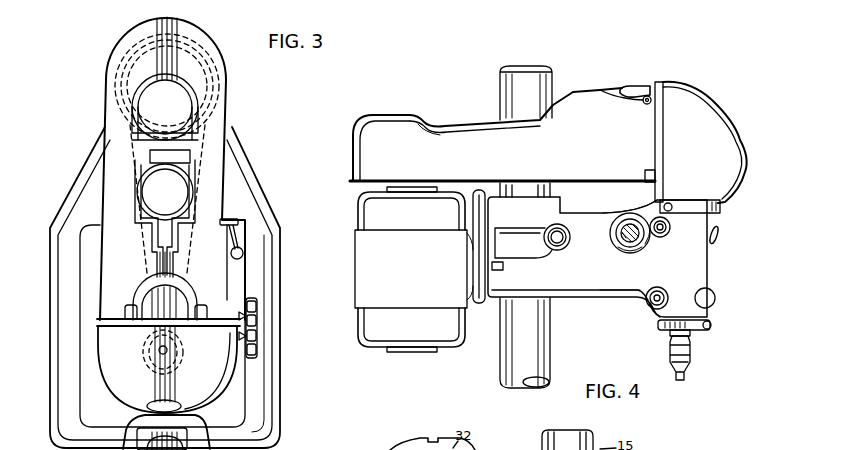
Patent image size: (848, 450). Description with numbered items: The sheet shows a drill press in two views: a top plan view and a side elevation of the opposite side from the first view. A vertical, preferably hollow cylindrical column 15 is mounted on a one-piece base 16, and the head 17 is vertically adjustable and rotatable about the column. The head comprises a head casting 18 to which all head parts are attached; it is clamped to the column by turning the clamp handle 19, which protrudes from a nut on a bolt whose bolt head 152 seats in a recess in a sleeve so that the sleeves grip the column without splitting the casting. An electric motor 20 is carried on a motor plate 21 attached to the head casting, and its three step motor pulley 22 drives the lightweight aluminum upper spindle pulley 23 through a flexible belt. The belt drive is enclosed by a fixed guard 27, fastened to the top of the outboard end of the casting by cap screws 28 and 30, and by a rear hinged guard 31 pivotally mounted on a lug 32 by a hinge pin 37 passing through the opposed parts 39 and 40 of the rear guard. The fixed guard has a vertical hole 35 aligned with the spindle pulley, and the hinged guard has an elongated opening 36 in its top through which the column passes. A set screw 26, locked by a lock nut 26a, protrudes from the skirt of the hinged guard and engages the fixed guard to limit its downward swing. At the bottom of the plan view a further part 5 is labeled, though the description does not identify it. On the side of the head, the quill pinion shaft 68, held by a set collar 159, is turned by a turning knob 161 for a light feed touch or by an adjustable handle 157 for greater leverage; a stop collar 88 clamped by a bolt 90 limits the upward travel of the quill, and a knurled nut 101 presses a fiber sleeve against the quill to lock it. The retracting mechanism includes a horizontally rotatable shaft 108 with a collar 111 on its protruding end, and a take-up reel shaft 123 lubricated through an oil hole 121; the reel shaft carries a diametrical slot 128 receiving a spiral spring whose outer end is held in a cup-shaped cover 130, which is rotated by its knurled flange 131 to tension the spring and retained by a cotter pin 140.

In FIG. 3, the base cap 5 is at (170, 432).
In FIG. 3, the column 15 is at (165, 203).
In FIG. 4, the column 15 is at (500, 88).
In FIG. 3, the base 16 is at (281, 401).
In FIG. 4, the head 17 is at (593, 304).
In FIG. 4, the head casting 18 is at (571, 291).
In FIG. 3, the clamp handle 19 is at (241, 238).
In FIG. 4, the electric motor 20 is at (377, 341).
In FIG. 4, the motor plate 21 is at (479, 305).
In FIG. 3, the motor pulley 22 is at (196, 42).
In FIG. 3, the upper spindle pulley 23 is at (178, 356).
In FIG. 4, the set screw 26 is at (656, 186).
In FIG. 4, the lock nut 26a is at (655, 175).
In FIG. 3, the fixed guard 27 is at (200, 396).
In FIG. 4, the fixed guard 27 is at (722, 122).
In FIG. 4, the cap screw 28 is at (721, 208).
In FIG. 4, the cap screw 30 is at (670, 204).
In FIG. 3, the hinged belt guard 31 is at (227, 83).
In FIG. 4, the hinged belt guard 31 is at (391, 109).
In FIG. 4, the lug 32 is at (634, 87).
In FIG. 3, the vertical hole 35 is at (159, 352).
In FIG. 3, the opening 36 is at (146, 108).
In FIG. 4, the opening 36 is at (428, 124).
In FIG. 4, the hinge pin 37 is at (640, 100).
In FIG. 3, the opposed part of rear guard 39 is at (129, 304).
In FIG. 4, the opposed part of rear guard 39 is at (645, 103).
In FIG. 3, the opposed part of rear guard 40 is at (199, 304).
In FIG. 4, the quill pinion shaft 68 is at (665, 301).
In FIG. 4, the stop collar 88 is at (658, 326).
In FIG. 4, the bolt 90 is at (709, 329).
In FIG. 4, the knurled nut 101 is at (715, 296).
In FIG. 4, the shaft 108 is at (670, 227).
In FIG. 4, the collar 111 is at (664, 237).
In FIG. 4, the oil hole 121 is at (631, 206).
In FIG. 4, the shaft 123 is at (617, 233).
In FIG. 4, the diametrical slot 128 is at (615, 241).
In FIG. 4, the cup-shaped cover 130 is at (627, 252).
In FIG. 4, the knurled flange 131 is at (641, 246).
In FIG. 4, the cotter pin 140 is at (612, 226).
In FIG. 4, the bolt head 152 is at (560, 250).
In FIG. 4, the handle 157 is at (718, 235).
In FIG. 4, the set collar 159 is at (664, 294).
In FIG. 3, the turning knob 161 is at (252, 299).